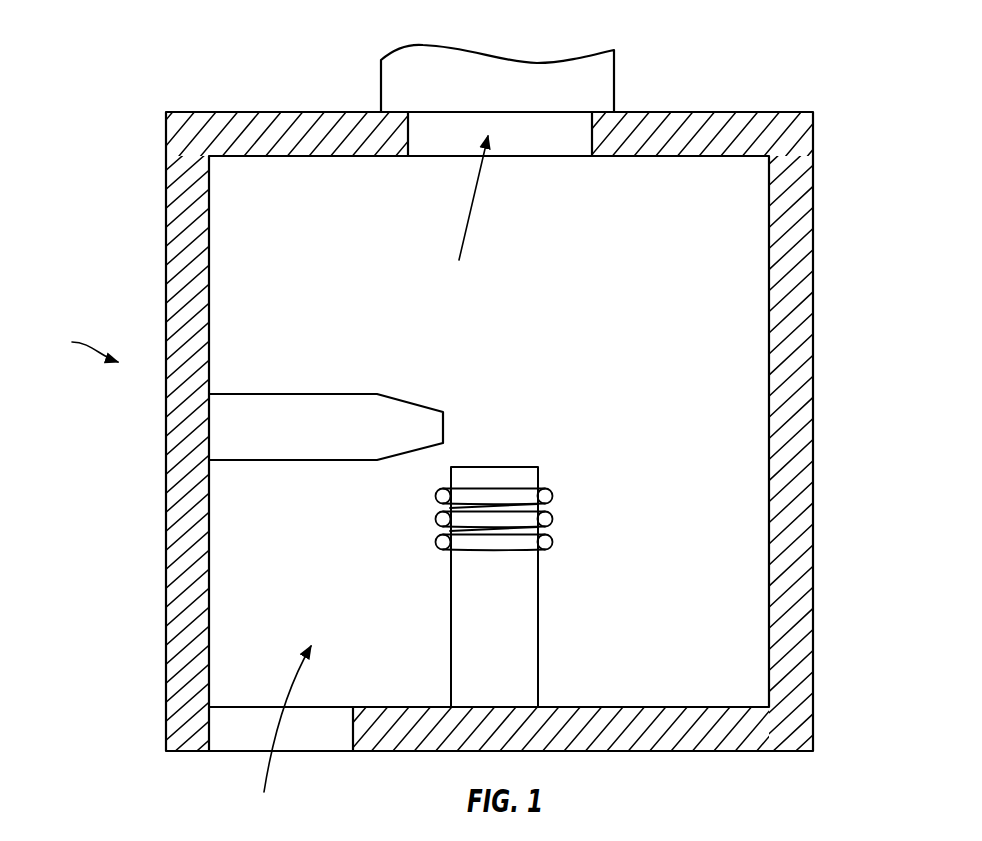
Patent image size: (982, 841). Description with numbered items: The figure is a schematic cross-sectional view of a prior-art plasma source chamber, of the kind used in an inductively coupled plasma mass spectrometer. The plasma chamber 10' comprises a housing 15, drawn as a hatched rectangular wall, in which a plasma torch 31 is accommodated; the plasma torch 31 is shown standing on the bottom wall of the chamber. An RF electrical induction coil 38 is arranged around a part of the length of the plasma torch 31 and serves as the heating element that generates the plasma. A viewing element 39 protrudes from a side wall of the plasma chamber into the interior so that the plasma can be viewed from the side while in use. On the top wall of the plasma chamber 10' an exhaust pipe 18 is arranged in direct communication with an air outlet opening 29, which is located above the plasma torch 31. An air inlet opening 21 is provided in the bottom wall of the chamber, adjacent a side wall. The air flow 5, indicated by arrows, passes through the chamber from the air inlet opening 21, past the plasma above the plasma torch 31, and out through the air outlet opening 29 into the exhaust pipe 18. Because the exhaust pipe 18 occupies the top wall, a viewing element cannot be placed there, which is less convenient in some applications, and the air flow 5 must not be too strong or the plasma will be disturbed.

The plasma chamber 10' is at (74, 344).
The housing 15 is at (813, 236).
The exhaust pipe 18 is at (614, 90).
The air outlet opening 29 is at (514, 175).
The air flow 5 is at (464, 231).
The viewing element 39 is at (272, 462).
The RF electrical induction coil 38 is at (553, 540).
The plasma torch 31 is at (539, 612).
The air inlet opening 21 is at (255, 760).